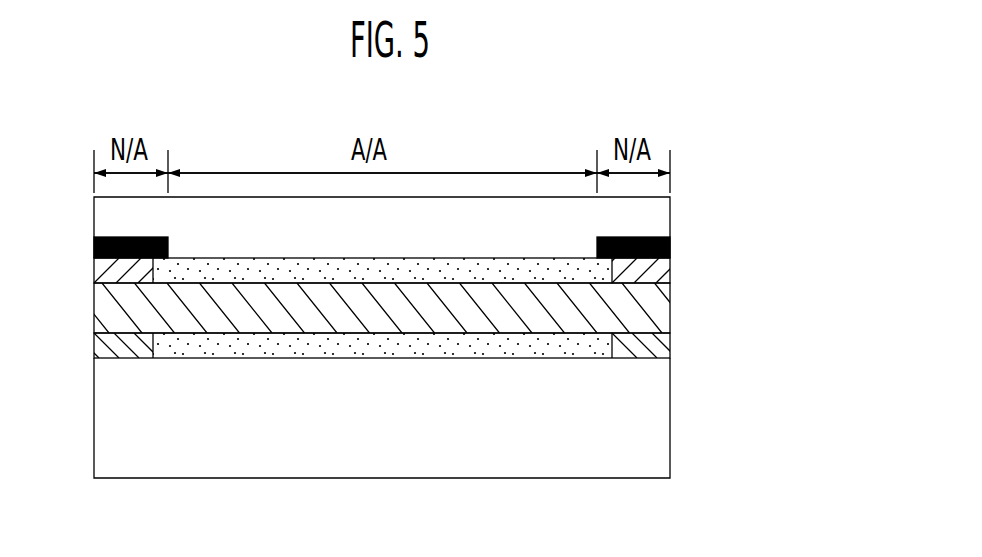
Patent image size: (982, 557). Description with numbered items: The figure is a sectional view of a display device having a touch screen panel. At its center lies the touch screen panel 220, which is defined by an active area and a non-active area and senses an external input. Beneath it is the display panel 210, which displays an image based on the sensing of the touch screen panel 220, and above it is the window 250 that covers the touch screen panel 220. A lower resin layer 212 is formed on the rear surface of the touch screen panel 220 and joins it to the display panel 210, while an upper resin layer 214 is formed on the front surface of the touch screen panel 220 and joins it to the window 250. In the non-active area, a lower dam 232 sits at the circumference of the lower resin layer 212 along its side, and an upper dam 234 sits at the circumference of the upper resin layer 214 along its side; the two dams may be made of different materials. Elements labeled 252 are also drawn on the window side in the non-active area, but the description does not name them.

The display panel 210 is at (665, 427).
The lower resin layer 212 is at (173, 338).
The upper resin layer 214 is at (173, 270).
The touch screen panel 220 is at (665, 315).
The lower dam 232 is at (384, 364).
The upper dam 234 is at (384, 287).
The window 250 is at (665, 209).
The electrode pads 252 is at (94, 247).